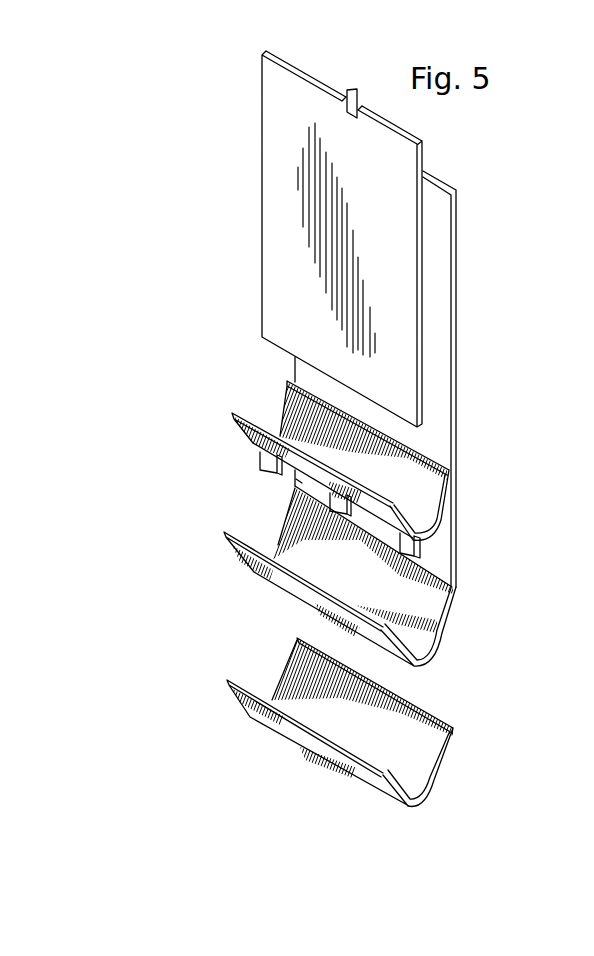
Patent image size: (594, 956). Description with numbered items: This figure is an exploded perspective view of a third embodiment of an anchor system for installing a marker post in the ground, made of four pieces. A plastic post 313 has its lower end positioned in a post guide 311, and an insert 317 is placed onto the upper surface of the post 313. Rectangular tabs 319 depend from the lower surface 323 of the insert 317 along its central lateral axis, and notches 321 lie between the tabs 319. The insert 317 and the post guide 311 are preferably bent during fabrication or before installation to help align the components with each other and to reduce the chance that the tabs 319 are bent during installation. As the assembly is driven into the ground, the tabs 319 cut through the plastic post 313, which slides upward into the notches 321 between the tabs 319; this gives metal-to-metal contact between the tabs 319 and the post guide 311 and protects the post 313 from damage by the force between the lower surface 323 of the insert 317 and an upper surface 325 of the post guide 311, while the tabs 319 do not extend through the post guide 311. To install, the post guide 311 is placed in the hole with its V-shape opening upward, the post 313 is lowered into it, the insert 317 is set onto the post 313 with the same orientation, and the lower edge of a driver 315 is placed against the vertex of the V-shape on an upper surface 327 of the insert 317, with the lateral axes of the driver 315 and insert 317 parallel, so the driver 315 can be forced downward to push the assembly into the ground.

The post guide 311 is at (433, 784).
The plastic post 313 is at (455, 412).
The driver 315 is at (423, 158).
The insert 317 is at (438, 518).
The rectangular tabs 319 is at (257, 458).
The notches 321 is at (300, 481).
The lower surface 323 is at (243, 428).
The upper surface 325 is at (290, 695).
The upper surface 327 is at (425, 478).